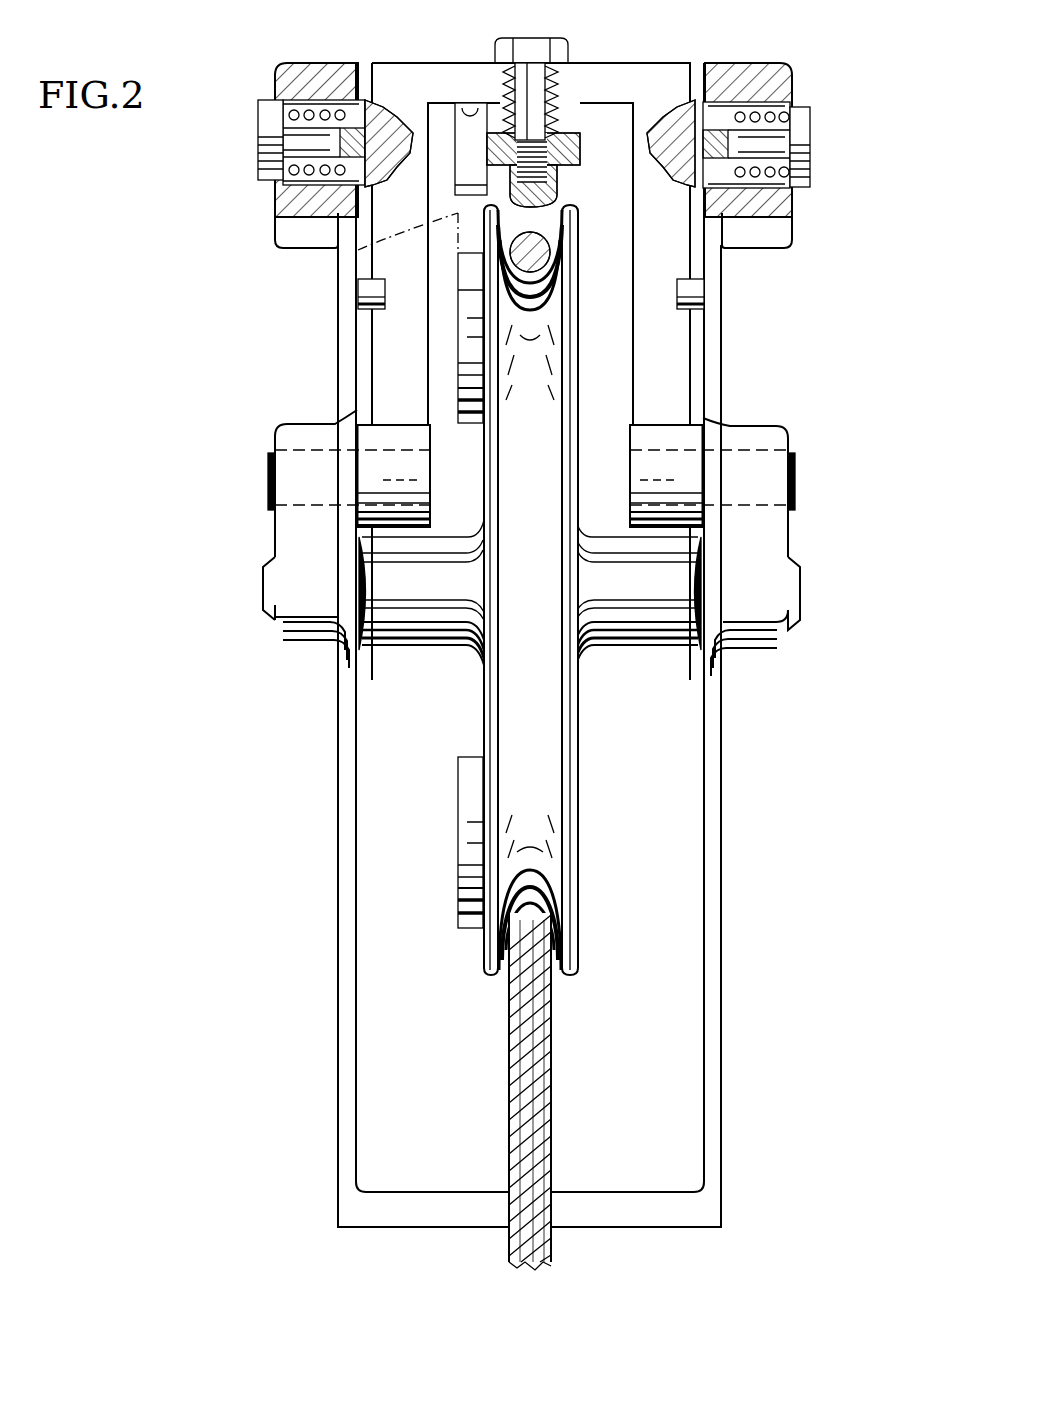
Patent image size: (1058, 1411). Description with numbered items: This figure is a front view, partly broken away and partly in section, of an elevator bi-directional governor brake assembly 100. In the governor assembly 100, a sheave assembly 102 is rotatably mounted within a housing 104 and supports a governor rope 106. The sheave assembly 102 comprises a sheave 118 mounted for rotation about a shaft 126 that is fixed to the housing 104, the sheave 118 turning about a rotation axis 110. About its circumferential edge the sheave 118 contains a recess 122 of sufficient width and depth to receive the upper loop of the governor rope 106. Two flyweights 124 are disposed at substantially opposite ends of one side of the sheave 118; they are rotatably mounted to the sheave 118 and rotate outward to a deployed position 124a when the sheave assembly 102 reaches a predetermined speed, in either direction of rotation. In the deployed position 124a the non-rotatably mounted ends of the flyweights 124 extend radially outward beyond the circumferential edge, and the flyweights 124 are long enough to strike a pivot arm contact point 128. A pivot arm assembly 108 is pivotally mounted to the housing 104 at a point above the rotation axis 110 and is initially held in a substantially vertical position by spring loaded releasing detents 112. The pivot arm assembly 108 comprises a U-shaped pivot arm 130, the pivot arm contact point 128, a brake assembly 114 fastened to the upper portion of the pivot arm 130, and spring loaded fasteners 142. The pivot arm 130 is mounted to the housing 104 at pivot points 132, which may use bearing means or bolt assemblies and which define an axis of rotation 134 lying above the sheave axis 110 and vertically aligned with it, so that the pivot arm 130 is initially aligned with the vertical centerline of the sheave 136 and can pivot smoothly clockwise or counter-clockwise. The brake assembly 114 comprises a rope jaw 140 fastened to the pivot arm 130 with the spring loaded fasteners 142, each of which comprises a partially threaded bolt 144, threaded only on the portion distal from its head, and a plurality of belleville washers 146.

The governor brake assembly 100 is at (170, 278).
The sheave assembly 102 is at (538, 590).
The housing 104 is at (330, 841).
The governor rope 106 is at (520, 1032).
The pivot arm assembly 108 is at (682, 61).
The rotation axis 110 is at (800, 593).
The spring loaded releasing detents 112 is at (257, 135).
The brake assembly 114 is at (578, 95).
The sheave 118 is at (482, 697).
The recess 122 is at (530, 853).
The flyweights 124 is at (463, 373).
The deployed position 124a is at (367, 247).
The shaft 126 is at (265, 587).
The pivot arm contact point 128 is at (467, 137).
The pivot arm 130 is at (397, 375).
The pivot points 132 is at (360, 478).
The axis of rotation 134 is at (795, 480).
The vertical centerline of the sheave 136 is at (387, 293).
The rope jaw 140 is at (563, 170).
The spring loaded fasteners 142 is at (578, 113).
The partially threaded bolt 144 is at (525, 45).
The belleville washers 146 is at (483, 104).